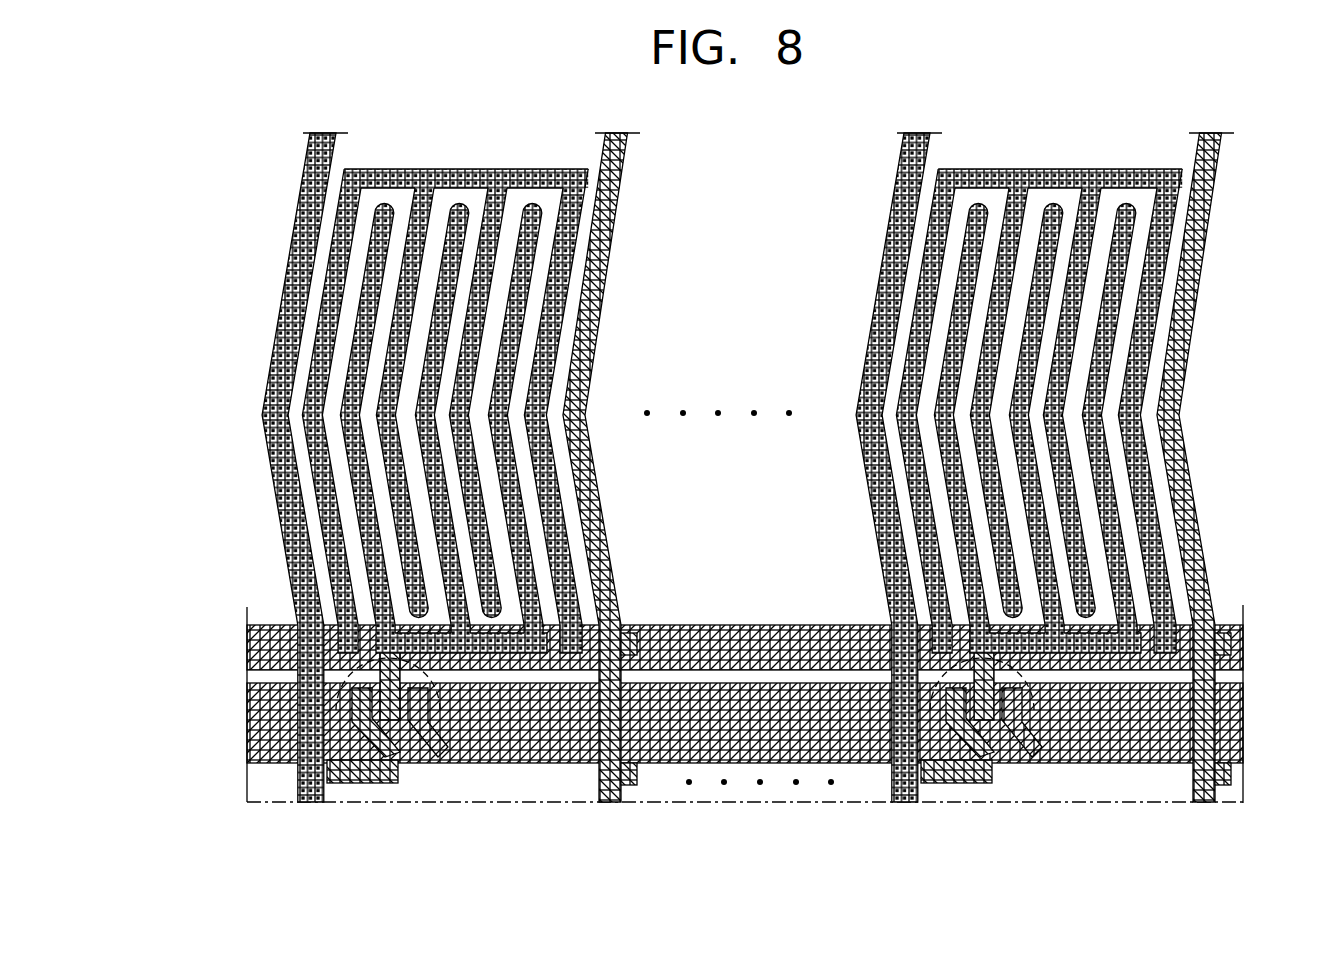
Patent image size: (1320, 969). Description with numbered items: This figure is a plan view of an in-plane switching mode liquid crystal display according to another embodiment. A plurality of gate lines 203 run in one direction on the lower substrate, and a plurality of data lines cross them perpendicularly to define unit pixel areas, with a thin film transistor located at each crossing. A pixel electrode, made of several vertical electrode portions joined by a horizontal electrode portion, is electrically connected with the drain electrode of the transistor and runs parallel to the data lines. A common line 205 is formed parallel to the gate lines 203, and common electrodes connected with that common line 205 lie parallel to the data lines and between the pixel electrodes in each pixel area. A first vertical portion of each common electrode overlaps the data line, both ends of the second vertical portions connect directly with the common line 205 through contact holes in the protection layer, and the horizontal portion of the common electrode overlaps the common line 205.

The gate line 203 is at (1243, 725).
The common line 205 is at (1243, 650).